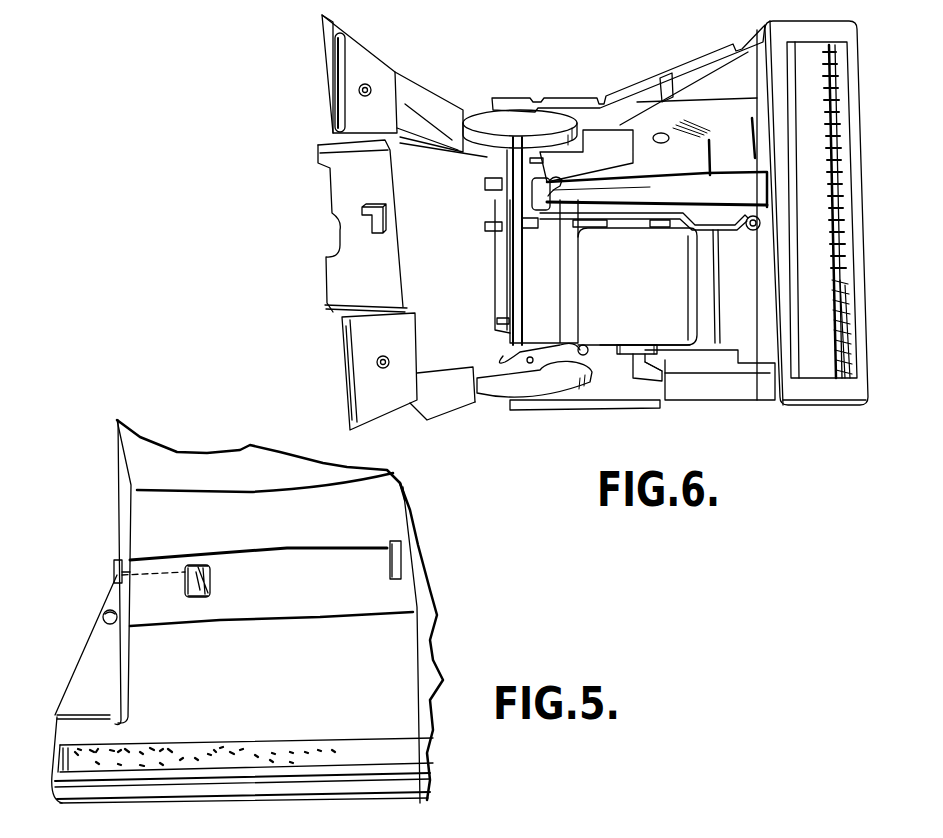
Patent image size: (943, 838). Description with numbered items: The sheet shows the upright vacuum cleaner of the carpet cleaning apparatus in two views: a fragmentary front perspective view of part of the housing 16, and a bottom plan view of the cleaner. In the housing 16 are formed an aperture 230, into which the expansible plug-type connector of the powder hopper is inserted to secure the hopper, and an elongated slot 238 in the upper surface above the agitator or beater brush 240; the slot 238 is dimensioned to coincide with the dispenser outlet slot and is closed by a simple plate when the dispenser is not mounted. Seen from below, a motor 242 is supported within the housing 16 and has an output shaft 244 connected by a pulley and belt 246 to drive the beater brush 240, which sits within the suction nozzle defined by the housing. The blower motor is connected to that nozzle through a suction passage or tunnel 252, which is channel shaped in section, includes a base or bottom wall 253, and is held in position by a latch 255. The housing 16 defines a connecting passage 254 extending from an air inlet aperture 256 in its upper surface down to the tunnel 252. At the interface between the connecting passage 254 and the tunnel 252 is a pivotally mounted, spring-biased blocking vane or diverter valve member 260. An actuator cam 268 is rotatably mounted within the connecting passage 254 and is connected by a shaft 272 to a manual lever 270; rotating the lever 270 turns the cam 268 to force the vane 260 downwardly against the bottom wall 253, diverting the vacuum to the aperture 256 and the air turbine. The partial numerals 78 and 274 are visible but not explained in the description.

In FIG. 6, the housing 16 is at (623, 98).
In FIG. 5, the housing 16 is at (373, 542).
In FIG. 6, the reference numeral (partial) 78 is at (86, 7).
In FIG. 5, the aperture 230 is at (105, 614).
In FIG. 6, the elongated slot 238 is at (828, 45).
In FIG. 5, the elongated slot 238 is at (287, 742).
In FIG. 6, the agitator or beater brush 240 is at (822, 337).
In FIG. 5, the agitator or beater brush 240 is at (84, 745).
In FIG. 6, the motor 242 is at (652, 290).
In FIG. 6, the output shaft 244 is at (633, 362).
In FIG. 6, the pulley and belt 246 is at (655, 381).
In FIG. 6, the suction passage or tunnel 252 is at (647, 190).
In FIG. 6, the base or bottom wall 253 is at (710, 178).
In FIG. 5, the connecting passage 254 is at (190, 566).
In FIG. 6, the latch 255 is at (548, 190).
In FIG. 5, the air inlet aperture 256 is at (198, 566).
In FIG. 5, the blocking vane or diverter valve member 260 is at (190, 600).
In FIG. 5, the actuator cam 268 is at (210, 577).
In FIG. 5, the manual lever 270 is at (115, 558).
In FIG. 5, the shaft 272 is at (148, 558).
In FIG. 5, the slot 274 is at (403, 553).